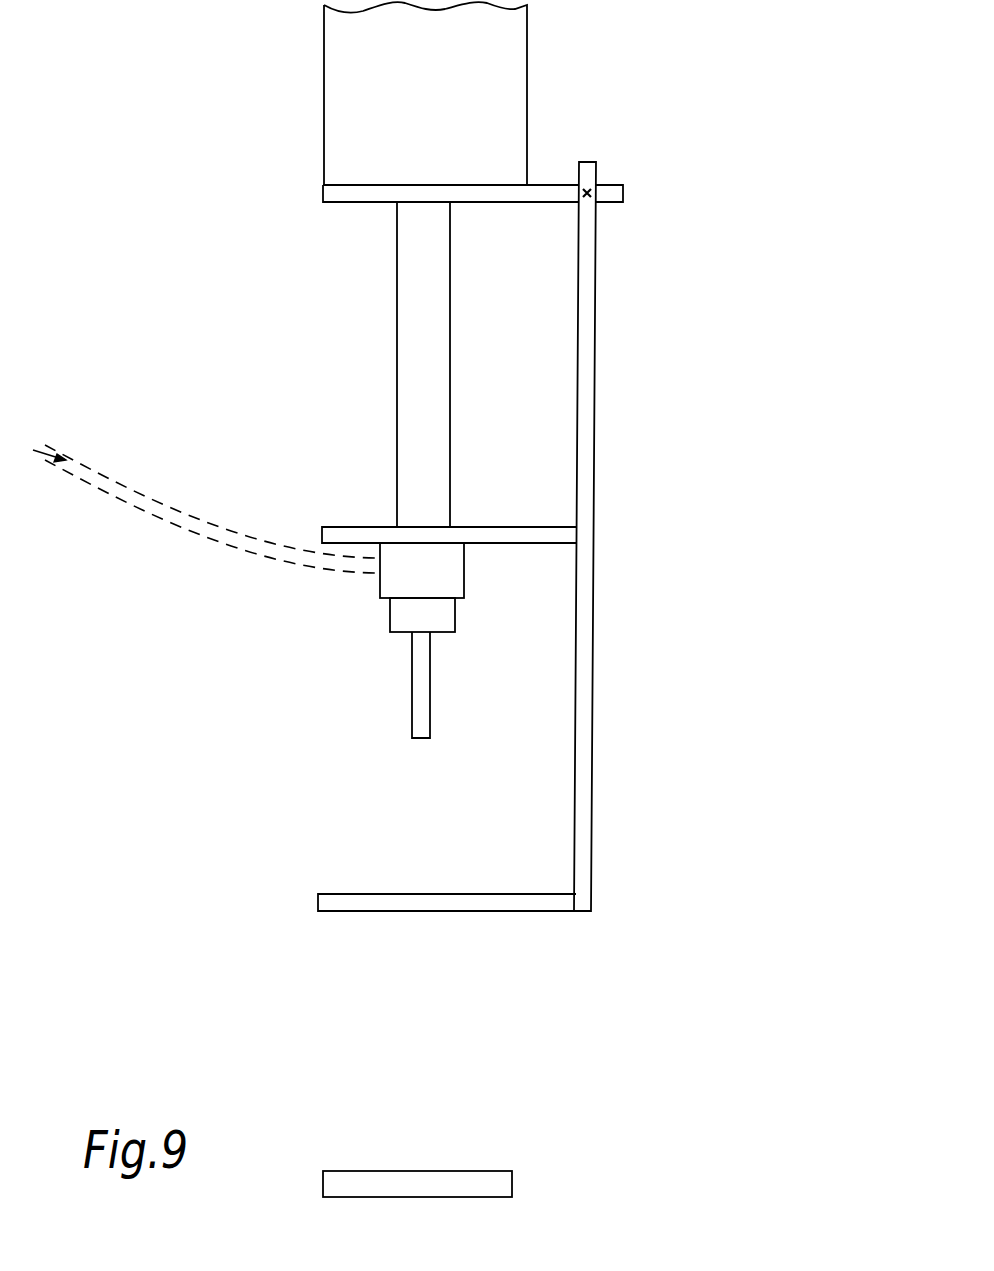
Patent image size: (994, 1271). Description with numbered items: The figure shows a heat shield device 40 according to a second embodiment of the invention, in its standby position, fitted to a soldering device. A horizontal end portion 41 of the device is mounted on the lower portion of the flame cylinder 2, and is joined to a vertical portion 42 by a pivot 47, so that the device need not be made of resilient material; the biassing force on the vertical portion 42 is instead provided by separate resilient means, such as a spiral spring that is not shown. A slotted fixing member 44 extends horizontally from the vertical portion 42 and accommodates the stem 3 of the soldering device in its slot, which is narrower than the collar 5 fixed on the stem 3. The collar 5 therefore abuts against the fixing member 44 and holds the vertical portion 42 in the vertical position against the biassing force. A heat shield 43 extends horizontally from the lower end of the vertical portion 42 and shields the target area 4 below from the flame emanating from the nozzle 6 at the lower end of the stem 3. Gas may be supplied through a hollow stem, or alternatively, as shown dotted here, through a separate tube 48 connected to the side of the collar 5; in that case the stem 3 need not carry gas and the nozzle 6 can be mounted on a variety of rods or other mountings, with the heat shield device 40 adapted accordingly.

The flame cylinder 2 is at (520, 58).
The stem 3 is at (401, 383).
The target area 4 is at (480, 1178).
The collar 5 is at (377, 587).
The nozzle 6 is at (393, 627).
The heat shield device 40 is at (589, 345).
The end portion 41 is at (374, 192).
The vertical portion 42 is at (584, 723).
The heat shield 43 is at (528, 907).
The fixing member 44 is at (520, 542).
The pivot 47 is at (589, 190).
The tube 48 is at (112, 475).